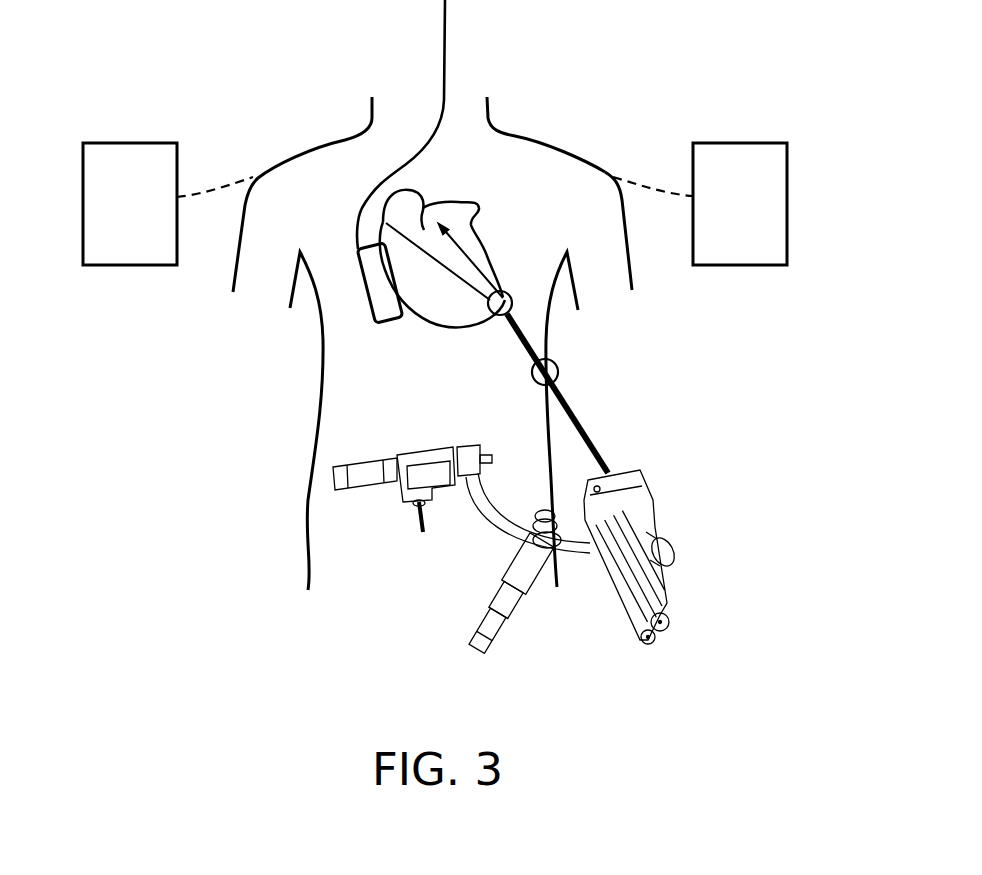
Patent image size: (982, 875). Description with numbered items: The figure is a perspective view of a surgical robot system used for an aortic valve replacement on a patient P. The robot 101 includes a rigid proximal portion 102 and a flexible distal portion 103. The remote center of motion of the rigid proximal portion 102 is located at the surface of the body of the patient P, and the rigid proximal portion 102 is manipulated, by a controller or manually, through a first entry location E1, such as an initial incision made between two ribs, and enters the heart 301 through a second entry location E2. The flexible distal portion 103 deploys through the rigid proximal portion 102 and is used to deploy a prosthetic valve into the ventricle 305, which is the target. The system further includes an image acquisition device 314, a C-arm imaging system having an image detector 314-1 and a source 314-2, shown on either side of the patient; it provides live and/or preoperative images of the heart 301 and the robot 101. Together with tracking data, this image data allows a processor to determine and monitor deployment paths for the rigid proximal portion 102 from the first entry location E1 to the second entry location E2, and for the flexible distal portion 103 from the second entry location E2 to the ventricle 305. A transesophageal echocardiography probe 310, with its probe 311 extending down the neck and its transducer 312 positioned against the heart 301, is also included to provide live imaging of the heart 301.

The robot 101 is at (606, 426).
The rigid proximal portion 102 is at (518, 338).
The flexible distal portion 103 is at (488, 250).
The heart 301 is at (429, 327).
The ventricle 305 is at (421, 200).
The transesophageal echocardiography (TEE) probe 310 is at (478, 88).
The probe 311 is at (444, 21).
The transducer 312 is at (373, 318).
The image acquisition device 314 is at (217, 161).
The image detector 314-1 is at (162, 211).
The source 314-2 is at (773, 211).
The patient P is at (578, 153).
The first entry location E1 is at (558, 368).
The second entry location E2 is at (511, 294).